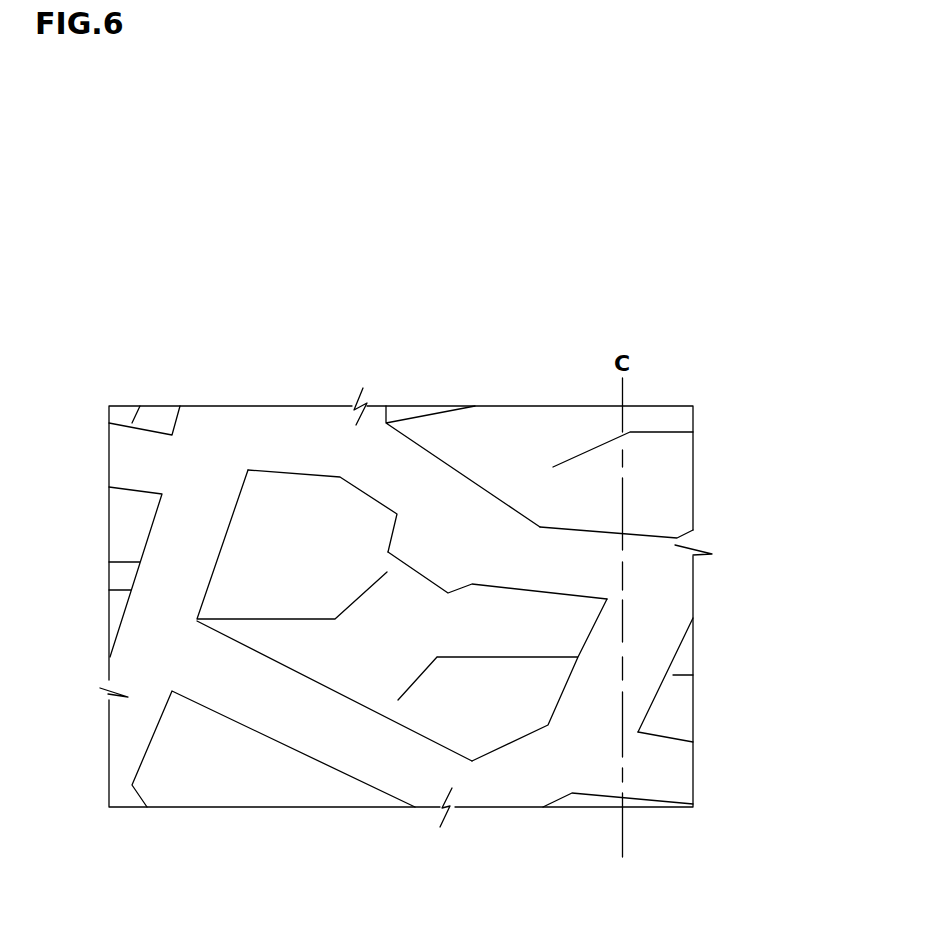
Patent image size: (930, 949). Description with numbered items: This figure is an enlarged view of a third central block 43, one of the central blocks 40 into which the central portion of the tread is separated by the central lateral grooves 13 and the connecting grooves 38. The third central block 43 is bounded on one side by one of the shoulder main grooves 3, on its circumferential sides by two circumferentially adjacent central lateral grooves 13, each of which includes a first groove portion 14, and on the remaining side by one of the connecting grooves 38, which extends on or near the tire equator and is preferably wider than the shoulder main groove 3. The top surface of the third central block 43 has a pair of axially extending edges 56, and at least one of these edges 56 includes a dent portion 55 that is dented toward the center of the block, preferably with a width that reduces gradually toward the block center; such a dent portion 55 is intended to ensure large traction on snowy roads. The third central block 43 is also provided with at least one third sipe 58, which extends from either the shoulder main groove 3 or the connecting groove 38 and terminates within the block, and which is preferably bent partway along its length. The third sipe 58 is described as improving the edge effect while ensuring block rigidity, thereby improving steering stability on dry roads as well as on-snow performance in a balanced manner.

The shoulder main groove 3 is at (210, 453).
The central block 40 is at (322, 577).
The third central block 43 is at (297, 475).
The dent portion 55 is at (430, 558).
The central lateral groove 13 is at (542, 568).
The first groove portion 14 is at (603, 444).
The axially extending edge 56 is at (370, 492).
The third sipe 58 is at (285, 620).
The connecting groove 38 is at (637, 653).